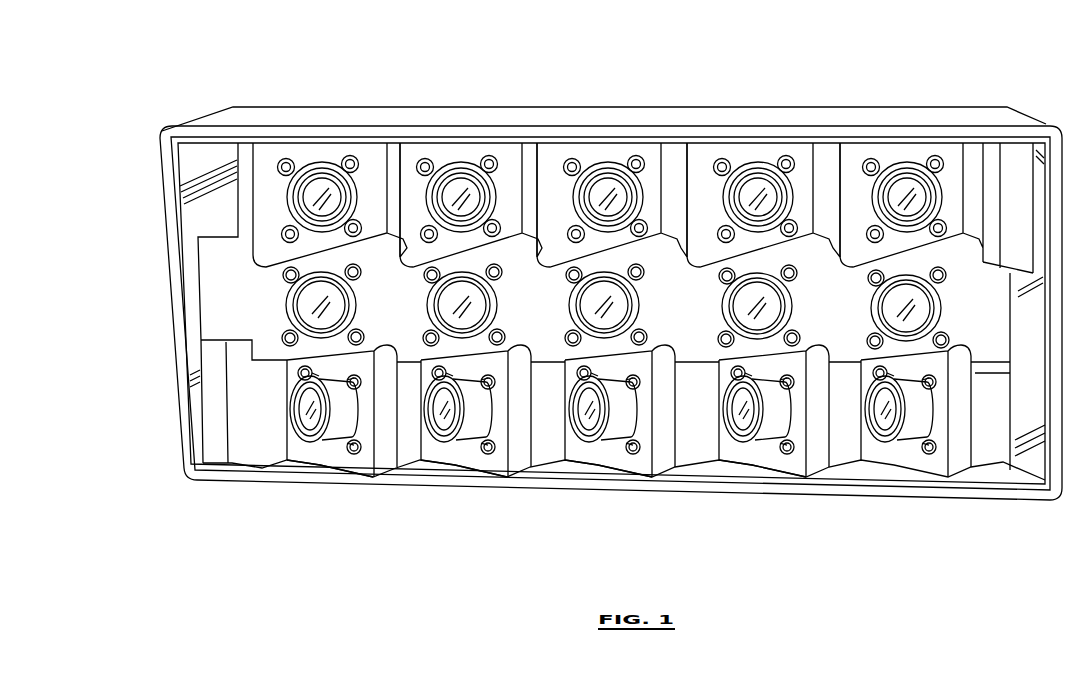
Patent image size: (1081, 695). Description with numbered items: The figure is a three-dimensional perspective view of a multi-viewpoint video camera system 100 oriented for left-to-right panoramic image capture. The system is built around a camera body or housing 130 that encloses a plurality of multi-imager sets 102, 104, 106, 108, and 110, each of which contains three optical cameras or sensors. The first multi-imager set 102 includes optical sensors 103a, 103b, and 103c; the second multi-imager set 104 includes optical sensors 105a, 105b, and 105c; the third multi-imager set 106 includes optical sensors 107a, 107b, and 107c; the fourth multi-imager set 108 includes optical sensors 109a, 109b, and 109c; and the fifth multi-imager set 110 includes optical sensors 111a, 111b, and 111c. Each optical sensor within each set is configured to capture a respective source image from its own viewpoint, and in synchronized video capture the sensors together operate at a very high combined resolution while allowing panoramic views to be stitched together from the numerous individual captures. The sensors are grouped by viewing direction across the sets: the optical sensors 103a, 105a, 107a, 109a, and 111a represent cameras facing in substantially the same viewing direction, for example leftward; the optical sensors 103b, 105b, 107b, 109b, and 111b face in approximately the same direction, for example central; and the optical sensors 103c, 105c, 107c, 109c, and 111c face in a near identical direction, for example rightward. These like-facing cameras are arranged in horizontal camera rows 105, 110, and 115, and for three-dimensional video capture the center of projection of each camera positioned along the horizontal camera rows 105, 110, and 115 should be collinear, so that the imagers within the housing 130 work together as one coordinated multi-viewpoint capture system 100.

The multi-viewpoint video camera system 100 is at (819, 54).
The camera body or housing 130 is at (258, 118).
The horizontal camera row 105 is at (233, 195).
The multi-imager set / horizontal camera row 110 is at (250, 298).
The horizontal camera row 115 is at (256, 413).
The multi-imager set 102 is at (317, 463).
The multi-imager set 104 is at (454, 473).
The multi-imager set 106 is at (599, 470).
The multi-imager set 108 is at (737, 473).
The optical sensor 103a is at (312, 176).
The optical sensor 105a is at (453, 176).
The optical sensor 107a is at (596, 176).
The optical sensor 109a is at (746, 176).
The optical sensor 111a is at (896, 176).
The optical sensor 103b is at (355, 304).
The optical sensor 105b is at (497, 304).
The optical sensor 107b is at (641, 304).
The optical sensor 109b is at (787, 307).
The optical sensor 111b is at (943, 308).
The optical sensor 103c is at (352, 411).
The optical sensor 105c is at (492, 411).
The optical sensor 107c is at (637, 411).
The optical sensor 109c is at (786, 414).
The optical sensor 111c is at (936, 415).